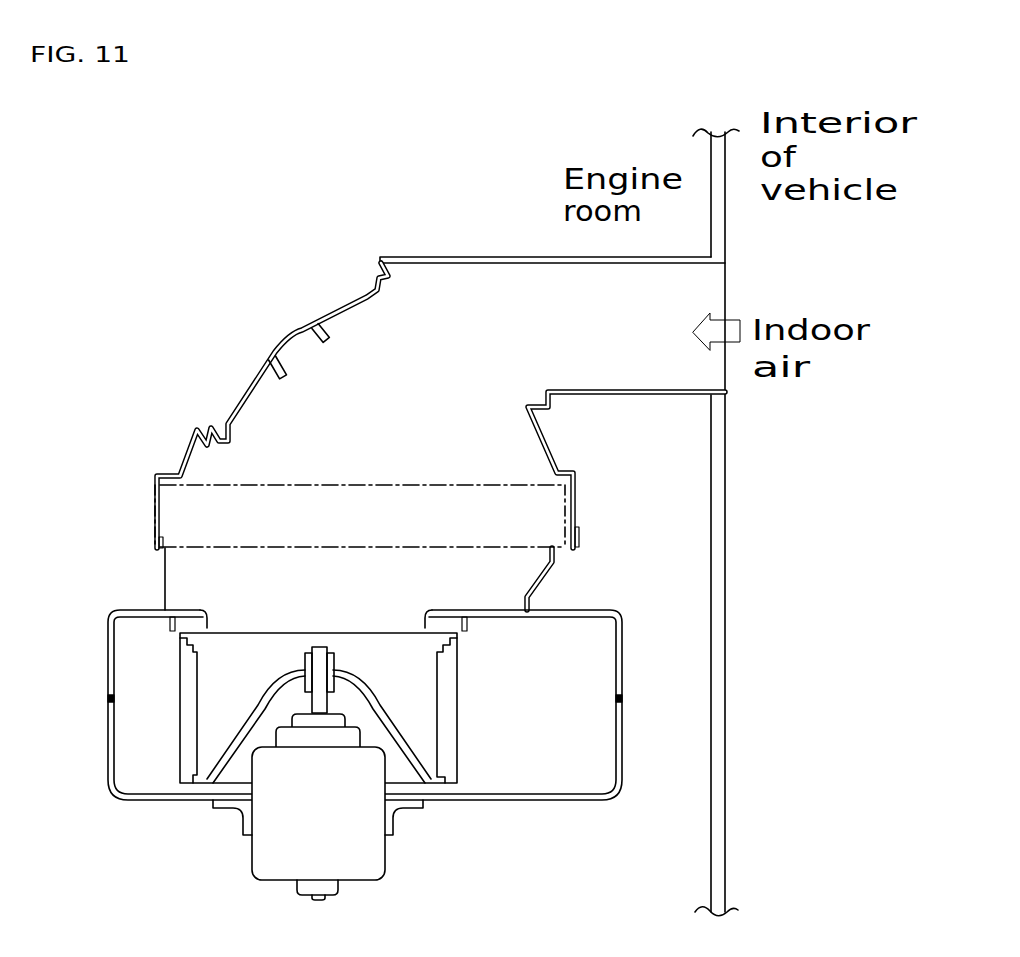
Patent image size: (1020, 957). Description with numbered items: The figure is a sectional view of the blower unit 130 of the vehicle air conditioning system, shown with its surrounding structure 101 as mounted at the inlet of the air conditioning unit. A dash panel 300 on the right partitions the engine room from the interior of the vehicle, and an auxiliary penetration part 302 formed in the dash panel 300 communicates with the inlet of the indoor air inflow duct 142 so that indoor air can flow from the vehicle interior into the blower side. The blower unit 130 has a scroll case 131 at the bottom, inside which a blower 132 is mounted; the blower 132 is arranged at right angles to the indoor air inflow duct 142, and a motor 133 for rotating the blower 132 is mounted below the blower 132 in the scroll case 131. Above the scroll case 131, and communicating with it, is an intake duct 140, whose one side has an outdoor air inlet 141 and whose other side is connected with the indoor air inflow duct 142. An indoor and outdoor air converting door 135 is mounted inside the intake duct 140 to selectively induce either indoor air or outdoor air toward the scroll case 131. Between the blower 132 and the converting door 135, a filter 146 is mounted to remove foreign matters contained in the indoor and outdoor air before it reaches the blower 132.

The air conditioning apparatus for vehicle 101 is at (381, 780).
The blower unit 130 is at (381, 780).
The scroll case 131 is at (623, 755).
The blower 132 is at (450, 750).
The motor 133 is at (275, 863).
The indoor and outdoor air converting door 135 is at (285, 338).
The intake duct 140 is at (553, 449).
The outdoor air inlet 141 is at (243, 392).
The indoor air inflow duct 142 is at (480, 257).
The filter 146 is at (237, 548).
The dash panel 300 is at (718, 878).
The auxiliary penetration part 302 is at (718, 255).